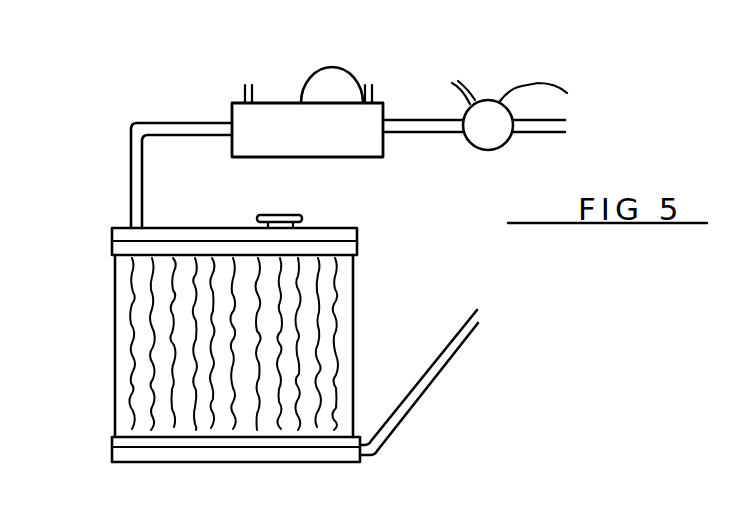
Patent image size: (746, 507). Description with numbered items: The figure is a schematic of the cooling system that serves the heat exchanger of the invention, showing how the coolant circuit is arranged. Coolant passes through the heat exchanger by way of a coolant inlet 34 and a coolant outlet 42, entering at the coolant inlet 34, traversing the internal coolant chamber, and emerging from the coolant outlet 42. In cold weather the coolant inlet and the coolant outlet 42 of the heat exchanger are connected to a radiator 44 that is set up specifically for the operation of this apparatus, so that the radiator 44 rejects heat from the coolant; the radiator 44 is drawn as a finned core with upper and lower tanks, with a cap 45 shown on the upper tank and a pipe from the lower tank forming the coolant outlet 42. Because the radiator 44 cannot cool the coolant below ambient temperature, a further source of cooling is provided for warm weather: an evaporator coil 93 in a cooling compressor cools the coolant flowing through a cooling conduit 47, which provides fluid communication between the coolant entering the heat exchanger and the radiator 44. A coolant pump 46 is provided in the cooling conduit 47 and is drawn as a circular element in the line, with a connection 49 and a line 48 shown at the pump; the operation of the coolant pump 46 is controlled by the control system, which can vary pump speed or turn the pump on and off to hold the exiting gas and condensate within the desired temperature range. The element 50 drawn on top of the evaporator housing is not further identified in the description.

The coolant inlet 34 is at (172, 123).
The coolant outlet 42 is at (438, 375).
The radiator 44 is at (110, 395).
The radiator cap 45 is at (283, 213).
The coolant pump 46 is at (469, 143).
The cooling conduit 47 is at (538, 133).
The electrical lead 48 is at (537, 83).
The inlet port 49 is at (452, 83).
The solenoid valve 50 is at (330, 68).
The evaporator coil 93 is at (383, 103).